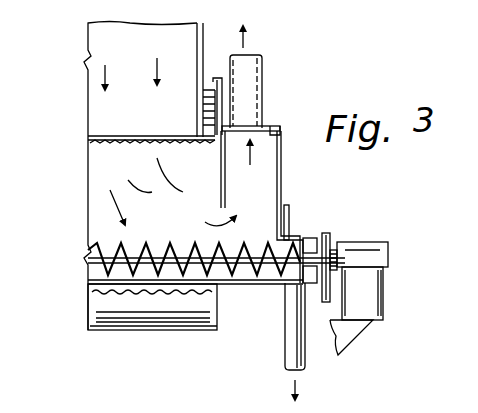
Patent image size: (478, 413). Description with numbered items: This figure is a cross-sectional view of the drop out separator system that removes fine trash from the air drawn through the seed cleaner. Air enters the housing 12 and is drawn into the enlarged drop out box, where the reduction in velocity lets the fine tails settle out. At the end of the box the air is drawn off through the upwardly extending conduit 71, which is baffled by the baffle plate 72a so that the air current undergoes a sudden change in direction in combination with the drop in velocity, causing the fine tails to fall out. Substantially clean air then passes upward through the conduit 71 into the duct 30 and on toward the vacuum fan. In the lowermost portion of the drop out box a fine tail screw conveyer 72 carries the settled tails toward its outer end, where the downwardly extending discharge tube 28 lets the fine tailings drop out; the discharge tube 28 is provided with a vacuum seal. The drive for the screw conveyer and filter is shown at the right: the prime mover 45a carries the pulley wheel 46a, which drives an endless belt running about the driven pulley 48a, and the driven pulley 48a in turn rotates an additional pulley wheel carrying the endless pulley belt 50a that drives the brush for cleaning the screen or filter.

The housing 12 is at (90, 39).
The duct 30 is at (263, 70).
The upwardly extending conduit 71 is at (249, 200).
The baffle plate 72a is at (221, 168).
The endless pulley belt 50a is at (287, 205).
The fine tail screw conveyer 72 is at (150, 248).
The driven pulley belt 48a is at (325, 232).
The pulley wheel 46a is at (340, 250).
The prime mover 45a is at (378, 243).
The discharge tube 28 is at (284, 350).